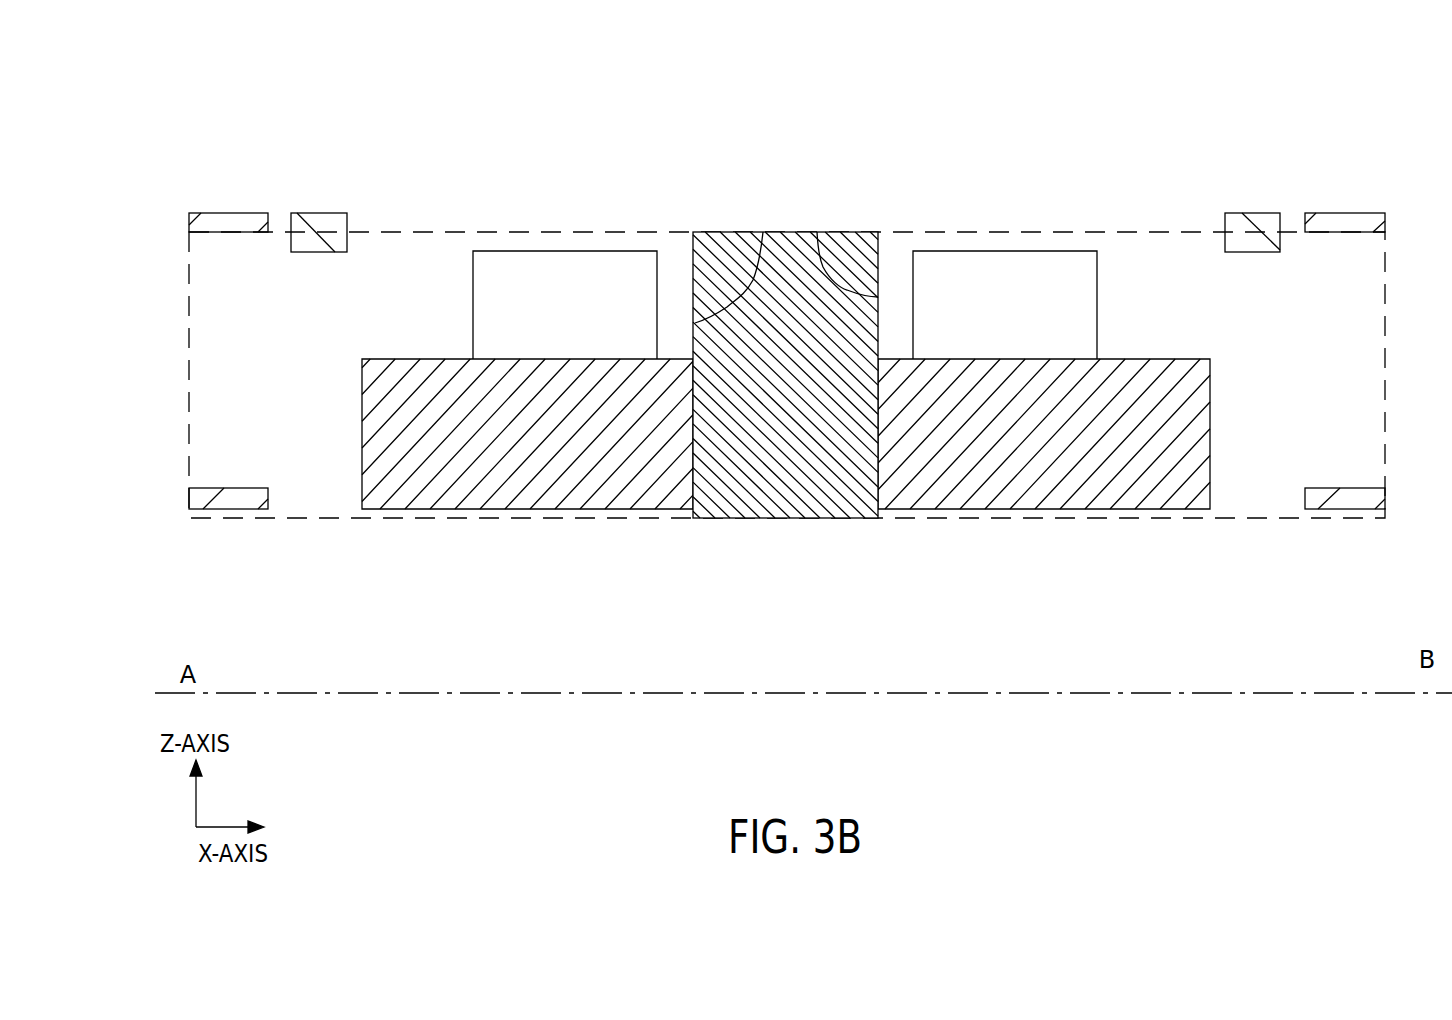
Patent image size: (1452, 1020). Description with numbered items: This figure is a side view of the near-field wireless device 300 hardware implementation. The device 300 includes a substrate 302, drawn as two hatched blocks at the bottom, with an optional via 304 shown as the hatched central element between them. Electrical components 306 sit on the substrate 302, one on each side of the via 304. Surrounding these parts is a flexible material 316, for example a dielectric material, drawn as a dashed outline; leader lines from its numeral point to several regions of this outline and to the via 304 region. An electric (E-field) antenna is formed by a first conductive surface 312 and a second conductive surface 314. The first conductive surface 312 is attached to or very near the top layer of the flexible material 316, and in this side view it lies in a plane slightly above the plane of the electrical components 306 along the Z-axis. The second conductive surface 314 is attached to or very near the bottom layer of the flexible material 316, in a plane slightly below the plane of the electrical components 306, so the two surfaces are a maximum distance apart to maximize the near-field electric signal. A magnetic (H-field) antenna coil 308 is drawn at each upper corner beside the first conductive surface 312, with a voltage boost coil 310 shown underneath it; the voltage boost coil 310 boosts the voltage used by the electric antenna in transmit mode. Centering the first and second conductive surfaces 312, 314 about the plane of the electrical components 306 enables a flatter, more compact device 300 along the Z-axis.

The near-field wireless device 300 is at (165, 93).
The substrate 302 is at (570, 475).
The via 304 is at (793, 478).
The electrical components 306 is at (543, 321).
The magnetic (H-field) antenna coil 308 is at (328, 213).
The voltage boost coil 310 is at (318, 252).
The first conductive surface 312 is at (232, 213).
The second conductive surface 314 is at (242, 488).
The flexible material 316 is at (307, 518).